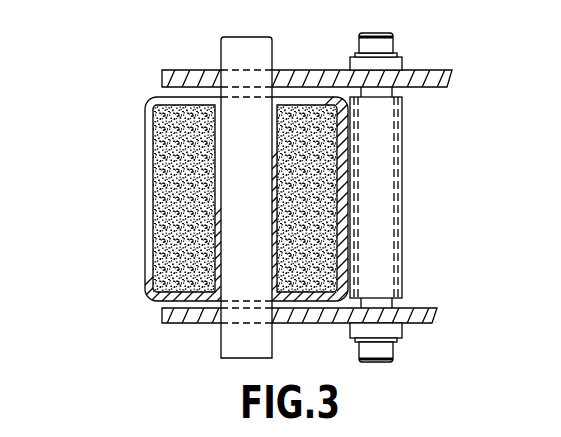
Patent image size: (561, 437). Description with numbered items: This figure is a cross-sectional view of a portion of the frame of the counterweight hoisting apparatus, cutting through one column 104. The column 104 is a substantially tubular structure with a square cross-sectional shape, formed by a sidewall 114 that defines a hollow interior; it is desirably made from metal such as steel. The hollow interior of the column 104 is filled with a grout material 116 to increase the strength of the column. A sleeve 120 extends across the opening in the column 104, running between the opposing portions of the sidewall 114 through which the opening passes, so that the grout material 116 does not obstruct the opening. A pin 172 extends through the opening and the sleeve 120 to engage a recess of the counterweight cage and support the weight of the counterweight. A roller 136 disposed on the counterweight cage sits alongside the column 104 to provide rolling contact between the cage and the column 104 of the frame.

The column 104 is at (296, 210).
The sidewall 114 is at (149, 102).
The grout material 116 is at (153, 222).
The sleeve 120 is at (213, 175).
The roller 136 is at (402, 180).
The pin 172 is at (221, 339).